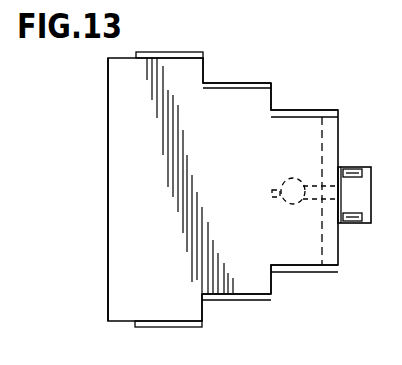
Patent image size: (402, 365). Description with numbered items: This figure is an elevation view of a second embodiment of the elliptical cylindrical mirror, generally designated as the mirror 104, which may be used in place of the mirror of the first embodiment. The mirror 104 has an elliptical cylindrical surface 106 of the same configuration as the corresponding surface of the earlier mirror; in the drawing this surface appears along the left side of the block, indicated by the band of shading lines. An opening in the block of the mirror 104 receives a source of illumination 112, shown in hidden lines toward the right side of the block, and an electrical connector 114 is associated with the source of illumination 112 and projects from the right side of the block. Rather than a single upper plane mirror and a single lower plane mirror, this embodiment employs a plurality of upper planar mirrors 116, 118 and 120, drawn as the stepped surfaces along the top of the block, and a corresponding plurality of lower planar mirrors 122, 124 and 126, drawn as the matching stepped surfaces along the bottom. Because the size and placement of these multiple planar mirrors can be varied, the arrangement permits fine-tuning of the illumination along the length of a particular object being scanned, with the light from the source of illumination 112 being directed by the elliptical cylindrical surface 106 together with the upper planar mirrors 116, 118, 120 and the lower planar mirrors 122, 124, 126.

The mirror 104 is at (293, 288).
The elliptical cylindrical surface 106 is at (116, 188).
The source of illumination 112 is at (288, 208).
The electrical connector 114 is at (355, 167).
The upper planar mirror 116 is at (293, 110).
The upper planar mirror 118 is at (233, 83).
The upper planar mirror 120 is at (170, 52).
The lower planar mirror 122 is at (324, 272).
The lower planar mirror 124 is at (237, 300).
The lower planar mirror 126 is at (187, 327).